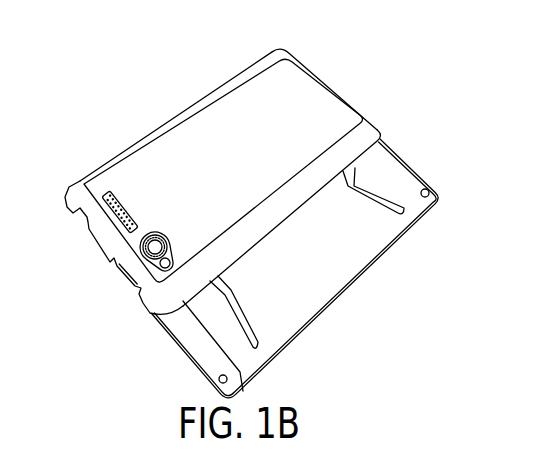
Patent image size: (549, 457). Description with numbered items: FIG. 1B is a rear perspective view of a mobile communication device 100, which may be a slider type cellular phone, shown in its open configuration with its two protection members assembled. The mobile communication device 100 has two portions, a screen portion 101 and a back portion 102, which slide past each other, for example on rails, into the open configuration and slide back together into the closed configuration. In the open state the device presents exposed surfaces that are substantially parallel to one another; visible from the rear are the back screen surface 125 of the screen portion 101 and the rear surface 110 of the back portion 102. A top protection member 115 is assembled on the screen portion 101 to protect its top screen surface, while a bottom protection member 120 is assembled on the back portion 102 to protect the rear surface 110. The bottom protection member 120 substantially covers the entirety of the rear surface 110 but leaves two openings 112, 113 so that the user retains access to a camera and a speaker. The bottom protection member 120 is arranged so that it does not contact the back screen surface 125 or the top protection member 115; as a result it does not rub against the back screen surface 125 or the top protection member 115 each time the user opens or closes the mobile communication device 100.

The mobile communication device 100 is at (106, 118).
The screen portion 101 is at (403, 259).
The back portion 102 is at (209, 83).
The rear surface 110 is at (102, 238).
The opening 112 is at (162, 235).
The opening 113 is at (103, 197).
The top protection member 115 is at (309, 326).
The bottom protection member 120 is at (338, 97).
The back screen surface 125 is at (261, 365).